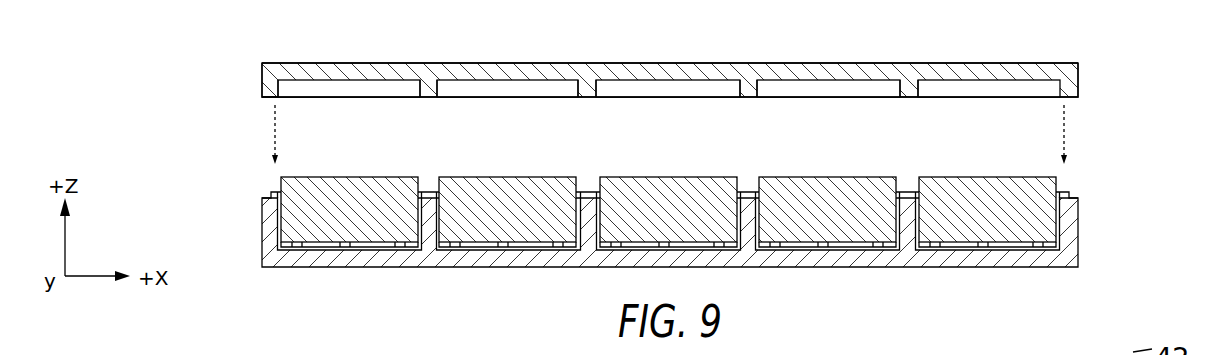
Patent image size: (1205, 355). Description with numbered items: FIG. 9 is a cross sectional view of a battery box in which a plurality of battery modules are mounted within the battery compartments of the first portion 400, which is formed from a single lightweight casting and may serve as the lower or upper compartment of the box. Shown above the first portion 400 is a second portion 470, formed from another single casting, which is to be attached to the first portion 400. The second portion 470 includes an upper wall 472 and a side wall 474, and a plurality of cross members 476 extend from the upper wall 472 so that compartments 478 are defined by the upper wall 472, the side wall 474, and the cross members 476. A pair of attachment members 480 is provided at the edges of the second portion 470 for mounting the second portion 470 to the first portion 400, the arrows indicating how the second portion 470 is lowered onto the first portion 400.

The first portion 400 is at (1104, 230).
The second portion 470 is at (1040, 56).
The upper wall 472 is at (905, 63).
The side wall 474 is at (262, 80).
The cross members 476 is at (427, 97).
The compartments 478 is at (348, 88).
The attachment members 480 is at (262, 98).